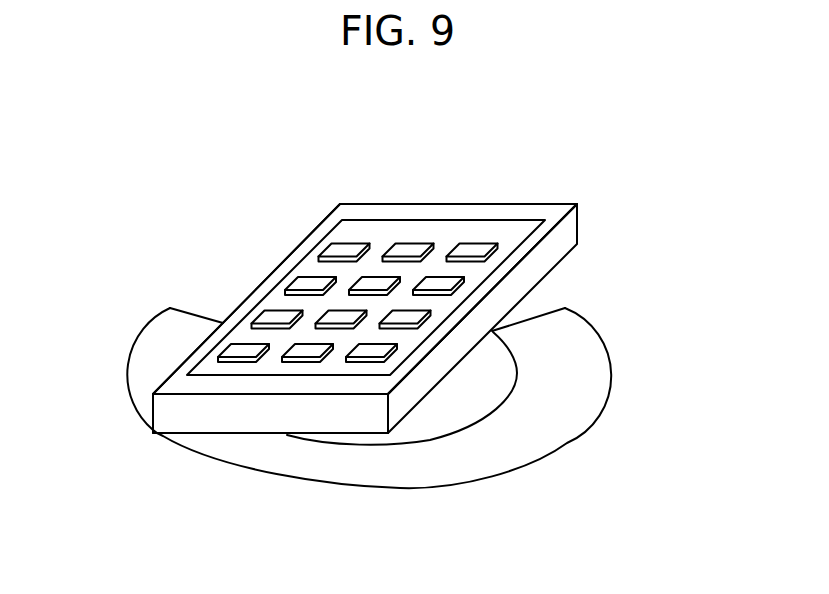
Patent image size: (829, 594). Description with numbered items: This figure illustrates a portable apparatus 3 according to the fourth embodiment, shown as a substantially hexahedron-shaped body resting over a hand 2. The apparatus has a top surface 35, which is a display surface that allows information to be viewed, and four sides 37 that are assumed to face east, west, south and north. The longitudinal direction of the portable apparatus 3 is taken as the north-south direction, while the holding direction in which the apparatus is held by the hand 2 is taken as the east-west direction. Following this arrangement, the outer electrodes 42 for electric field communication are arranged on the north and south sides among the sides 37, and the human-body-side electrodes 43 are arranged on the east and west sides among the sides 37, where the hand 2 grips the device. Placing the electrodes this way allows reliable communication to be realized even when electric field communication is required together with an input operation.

The hand 2 is at (443, 472).
The portable apparatus 3 is at (615, 180).
The top surface 35 is at (358, 228).
The sides 37 is at (397, 212).
The outer electrodes 42 is at (466, 198).
The human-body-side electrodes 43 is at (249, 283).